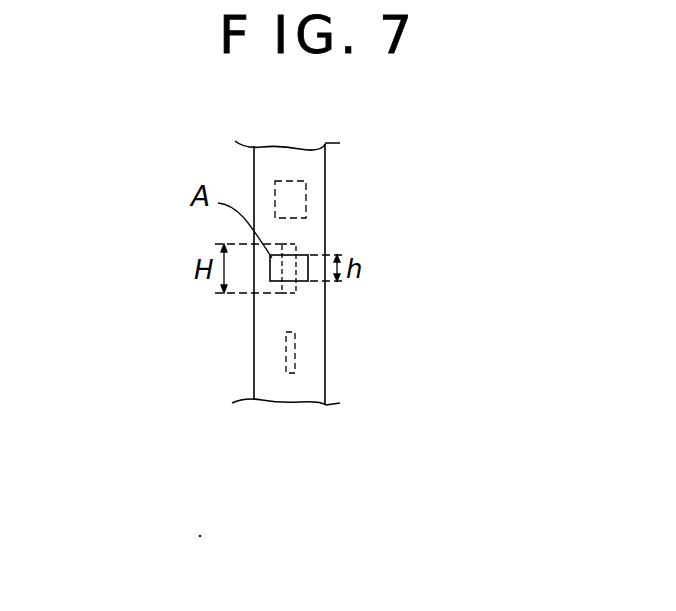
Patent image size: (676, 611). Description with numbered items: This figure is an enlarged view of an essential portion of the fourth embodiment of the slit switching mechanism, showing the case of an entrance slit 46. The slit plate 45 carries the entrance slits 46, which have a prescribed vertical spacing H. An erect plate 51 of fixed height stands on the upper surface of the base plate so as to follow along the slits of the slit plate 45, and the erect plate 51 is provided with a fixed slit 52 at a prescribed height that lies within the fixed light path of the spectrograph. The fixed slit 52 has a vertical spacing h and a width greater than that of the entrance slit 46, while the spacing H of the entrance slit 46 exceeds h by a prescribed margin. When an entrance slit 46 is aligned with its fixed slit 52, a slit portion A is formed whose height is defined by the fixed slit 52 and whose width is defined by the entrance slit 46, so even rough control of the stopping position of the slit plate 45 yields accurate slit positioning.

The slit plate 45 is at (335, 182).
The entrance slit 46 is at (280, 180).
The erect plate 51 is at (313, 353).
The fixed slit 52 is at (305, 253).